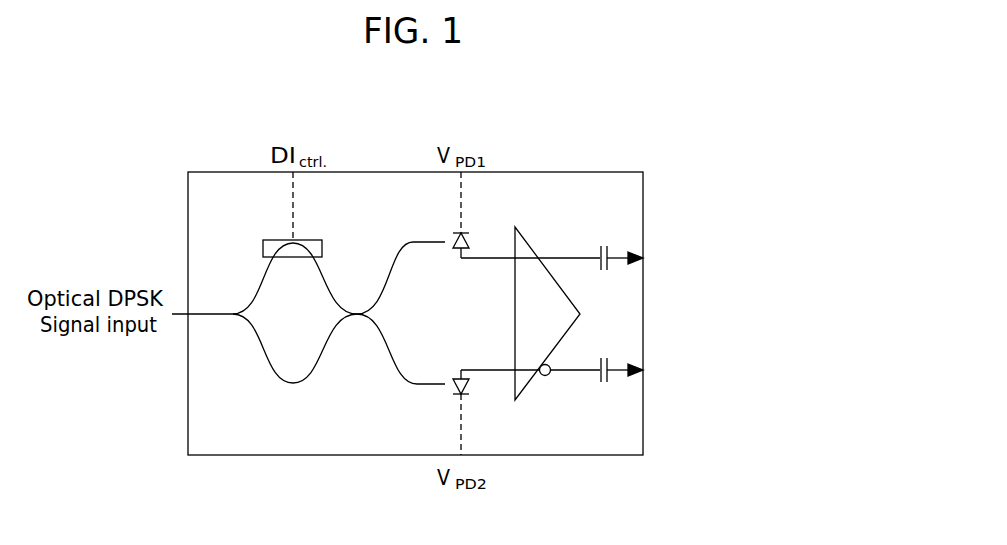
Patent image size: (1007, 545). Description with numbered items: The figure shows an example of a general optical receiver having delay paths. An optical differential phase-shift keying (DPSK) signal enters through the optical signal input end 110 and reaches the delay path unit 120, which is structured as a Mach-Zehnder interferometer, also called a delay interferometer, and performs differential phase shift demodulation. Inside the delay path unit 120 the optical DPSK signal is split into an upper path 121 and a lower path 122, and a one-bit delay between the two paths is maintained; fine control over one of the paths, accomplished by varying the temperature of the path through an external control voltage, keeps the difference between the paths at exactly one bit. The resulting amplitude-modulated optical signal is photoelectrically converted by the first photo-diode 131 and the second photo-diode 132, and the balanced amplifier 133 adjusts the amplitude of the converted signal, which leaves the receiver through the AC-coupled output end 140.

The optical signal input end 110 is at (190, 312).
The delay path unit 120 is at (319, 345).
The upper path 121 is at (322, 257).
The lower path 122 is at (313, 357).
The first photo-diode PD1 131 is at (463, 231).
The second photo-diode PD2 132 is at (472, 368).
The balanced amplifier 133 is at (538, 258).
The AC-coupled output end 140 is at (652, 258).